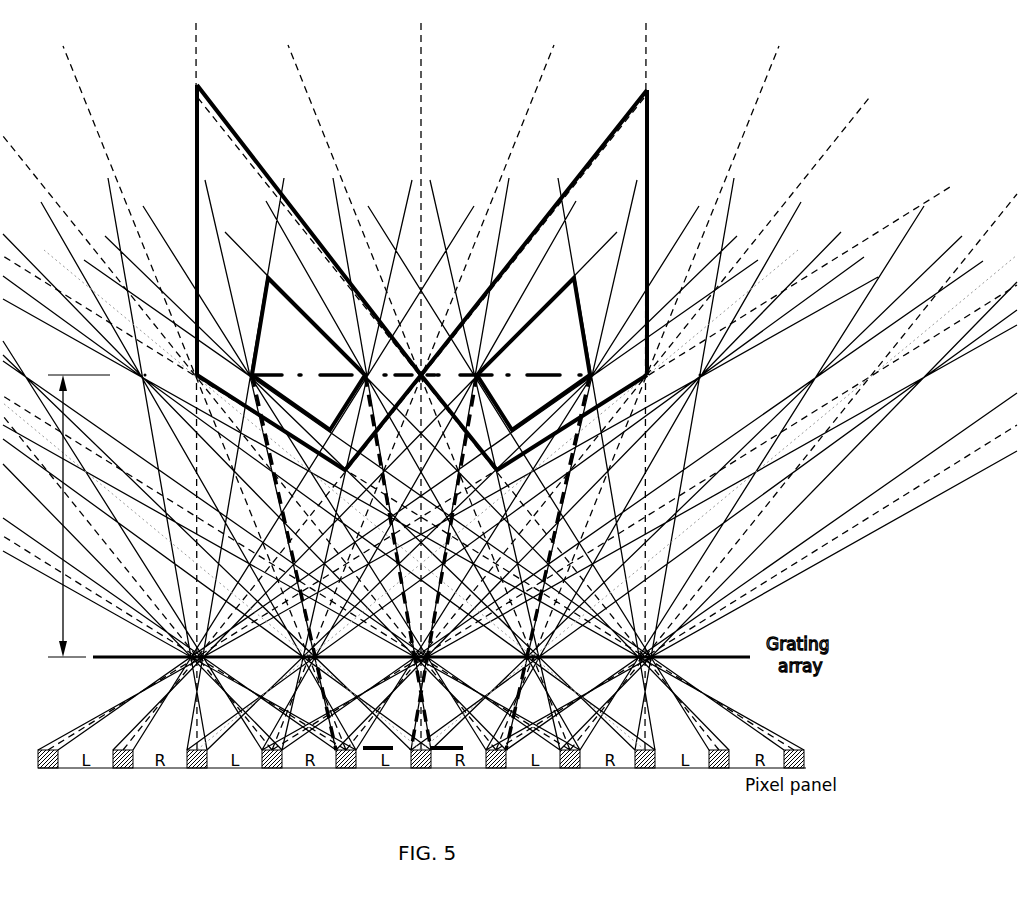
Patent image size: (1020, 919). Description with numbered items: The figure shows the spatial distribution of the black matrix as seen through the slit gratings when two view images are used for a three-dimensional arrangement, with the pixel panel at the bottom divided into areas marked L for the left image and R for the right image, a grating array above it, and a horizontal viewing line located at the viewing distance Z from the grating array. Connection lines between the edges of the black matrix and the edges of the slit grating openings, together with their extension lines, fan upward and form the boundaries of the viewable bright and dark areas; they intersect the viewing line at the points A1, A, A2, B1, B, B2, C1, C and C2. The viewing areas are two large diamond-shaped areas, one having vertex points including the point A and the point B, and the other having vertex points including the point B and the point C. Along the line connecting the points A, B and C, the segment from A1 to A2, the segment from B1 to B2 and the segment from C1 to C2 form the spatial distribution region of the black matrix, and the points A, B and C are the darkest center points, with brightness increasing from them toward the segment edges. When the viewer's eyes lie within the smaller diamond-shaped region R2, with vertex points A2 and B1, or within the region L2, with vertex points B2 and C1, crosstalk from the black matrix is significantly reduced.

The point A1 is at (151, 376).
The point A is at (205, 376).
The point A2 is at (262, 375).
The point B1 is at (348, 370).
The point B is at (411, 370).
The point B2 is at (467, 369).
The point C1 is at (578, 369).
The point C is at (639, 370).
The point C2 is at (692, 369).
The diamond-shaped region R2 is at (332, 360).
The diamond-shaped region L2 is at (504, 360).
The viewing distance Z is at (79, 516).